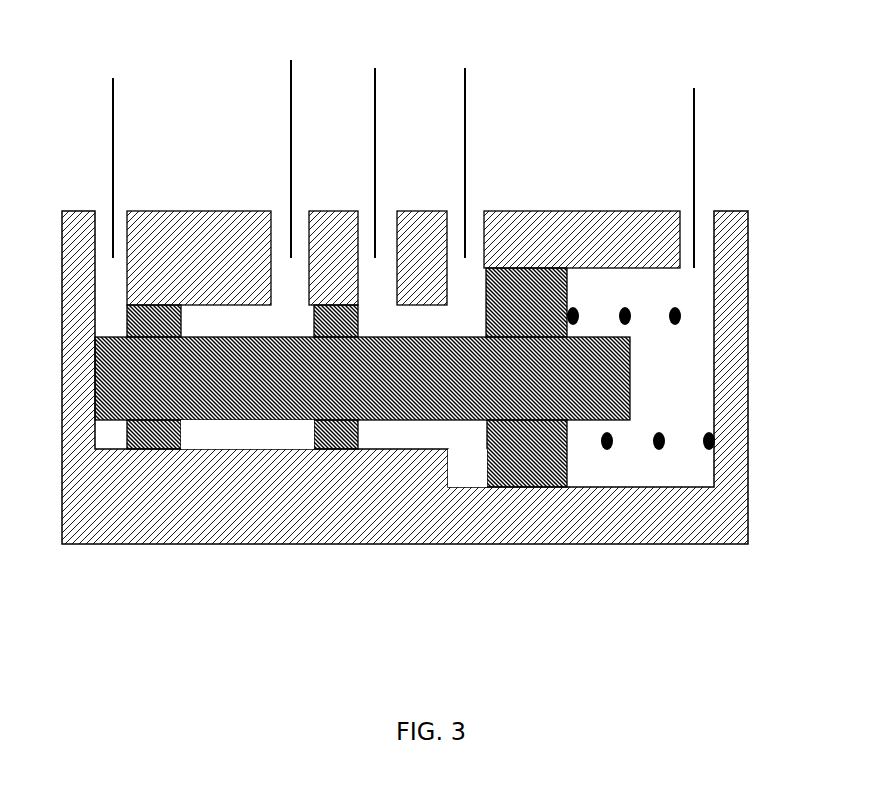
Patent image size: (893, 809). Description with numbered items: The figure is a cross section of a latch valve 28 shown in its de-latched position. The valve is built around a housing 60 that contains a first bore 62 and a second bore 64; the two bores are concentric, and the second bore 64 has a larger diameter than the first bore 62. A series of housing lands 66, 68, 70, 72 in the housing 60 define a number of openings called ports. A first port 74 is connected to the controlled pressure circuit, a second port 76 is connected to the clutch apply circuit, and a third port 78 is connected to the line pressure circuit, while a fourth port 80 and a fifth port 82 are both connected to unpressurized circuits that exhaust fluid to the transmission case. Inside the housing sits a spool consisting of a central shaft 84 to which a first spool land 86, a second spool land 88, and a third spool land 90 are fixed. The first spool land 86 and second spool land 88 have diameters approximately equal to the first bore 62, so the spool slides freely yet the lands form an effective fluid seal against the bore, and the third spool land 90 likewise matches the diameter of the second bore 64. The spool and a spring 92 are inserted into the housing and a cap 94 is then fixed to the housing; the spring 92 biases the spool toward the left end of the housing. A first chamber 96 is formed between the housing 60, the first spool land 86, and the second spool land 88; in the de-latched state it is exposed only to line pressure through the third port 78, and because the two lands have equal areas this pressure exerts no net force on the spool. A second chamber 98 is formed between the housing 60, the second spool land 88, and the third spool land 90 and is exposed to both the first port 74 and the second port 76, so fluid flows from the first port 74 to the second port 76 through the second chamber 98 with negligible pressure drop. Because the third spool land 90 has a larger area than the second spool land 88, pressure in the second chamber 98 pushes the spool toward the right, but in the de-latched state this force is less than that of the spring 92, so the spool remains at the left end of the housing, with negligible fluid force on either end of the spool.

The latch valve 28 is at (640, 86).
The housing 60 is at (98, 544).
The first bore 62 is at (217, 449).
The second bore 64 is at (685, 487).
The housing land 66 is at (240, 211).
The housing land 68 is at (343, 211).
The housing land 70 is at (426, 211).
The housing land 72 is at (582, 211).
The first port 74 is at (466, 135).
The second port 76 is at (375, 135).
The third port 78 is at (290, 129).
The fourth port 80 is at (113, 134).
The fifth port 82 is at (695, 143).
The central shaft 84 is at (632, 392).
The first spool land 86 is at (182, 432).
The second spool land 88 is at (358, 432).
The third spool land 90 is at (570, 455).
The spring 92 is at (625, 308).
The cap 94 is at (748, 447).
The first chamber 96 is at (280, 432).
The second chamber 98 is at (462, 447).